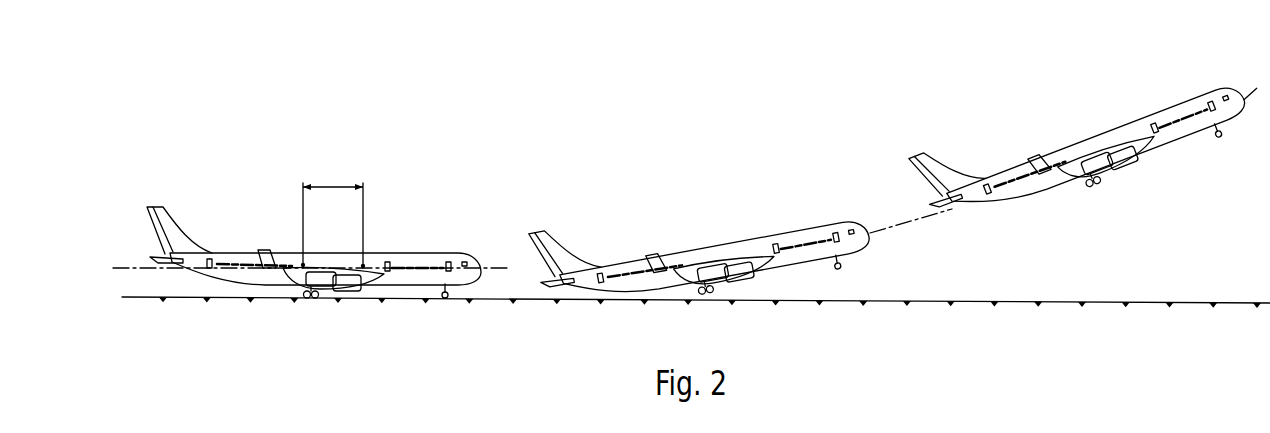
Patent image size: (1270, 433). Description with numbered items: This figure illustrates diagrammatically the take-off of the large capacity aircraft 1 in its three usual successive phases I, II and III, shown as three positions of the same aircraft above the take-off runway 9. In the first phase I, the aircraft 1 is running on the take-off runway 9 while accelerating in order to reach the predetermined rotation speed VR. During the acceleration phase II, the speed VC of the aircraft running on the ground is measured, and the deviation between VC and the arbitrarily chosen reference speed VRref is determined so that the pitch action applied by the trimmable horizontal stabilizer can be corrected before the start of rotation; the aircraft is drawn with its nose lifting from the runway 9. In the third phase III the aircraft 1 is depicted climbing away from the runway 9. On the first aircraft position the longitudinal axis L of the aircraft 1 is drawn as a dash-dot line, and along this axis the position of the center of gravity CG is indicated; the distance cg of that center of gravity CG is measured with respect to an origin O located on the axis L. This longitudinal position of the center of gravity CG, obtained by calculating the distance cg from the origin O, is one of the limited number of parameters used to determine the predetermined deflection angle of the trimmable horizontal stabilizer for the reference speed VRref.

The large capacity aircraft 1 is at (707, 178).
The take-off runway 9 is at (840, 304).
The first take-off phase I is at (278, 183).
The acceleration phase II is at (708, 219).
The third take-off phase III is at (1025, 143).
The center of gravity CG is at (303, 264).
The origin O is at (365, 265).
The distance of the center of gravity cg is at (333, 212).
The longitudinal axis L is at (532, 240).